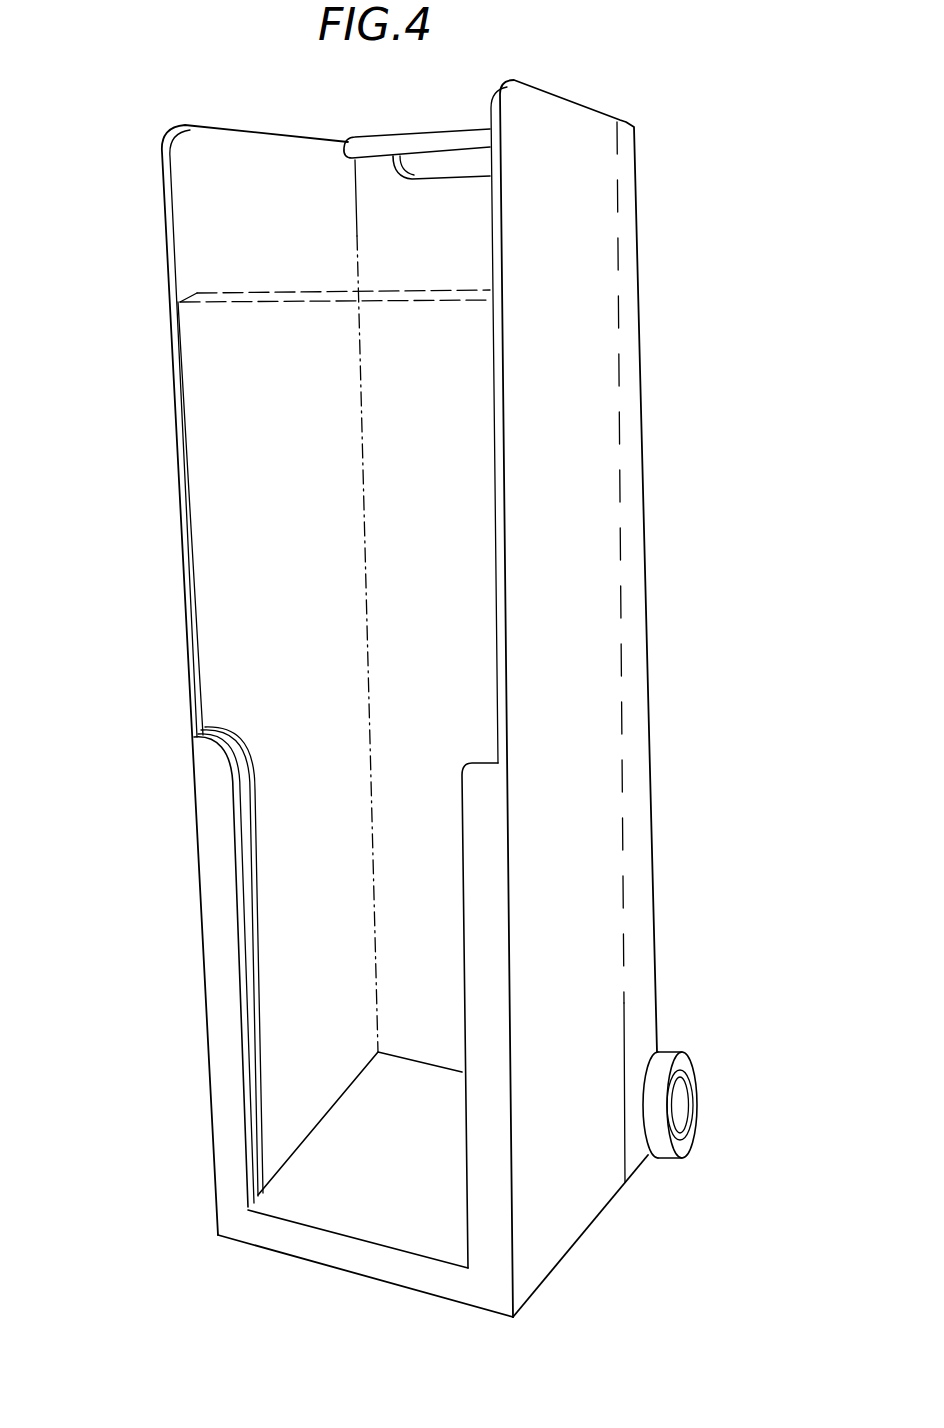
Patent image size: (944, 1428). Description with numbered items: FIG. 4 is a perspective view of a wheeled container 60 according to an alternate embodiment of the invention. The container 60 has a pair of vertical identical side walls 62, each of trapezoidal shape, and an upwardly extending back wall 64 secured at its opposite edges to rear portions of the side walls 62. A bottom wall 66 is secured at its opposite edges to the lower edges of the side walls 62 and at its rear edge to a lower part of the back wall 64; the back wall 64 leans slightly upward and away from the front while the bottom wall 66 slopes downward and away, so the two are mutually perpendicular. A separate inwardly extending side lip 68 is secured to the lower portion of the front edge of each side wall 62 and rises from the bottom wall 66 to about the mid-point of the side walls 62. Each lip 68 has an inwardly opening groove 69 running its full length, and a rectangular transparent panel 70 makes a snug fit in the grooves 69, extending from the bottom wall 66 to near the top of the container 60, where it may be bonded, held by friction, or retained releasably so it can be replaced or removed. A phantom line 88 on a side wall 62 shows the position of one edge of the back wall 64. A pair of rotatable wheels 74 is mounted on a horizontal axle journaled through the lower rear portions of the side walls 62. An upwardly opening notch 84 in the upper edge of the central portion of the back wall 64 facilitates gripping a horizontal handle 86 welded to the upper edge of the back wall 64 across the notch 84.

The container 60 is at (652, 292).
The side walls 62 is at (166, 278).
The back wall 64 is at (380, 173).
The bottom wall 66 is at (314, 1212).
The side lip 68 is at (212, 822).
The groove 69 is at (212, 730).
The transparent panel 70 is at (423, 290).
The wheels 74 is at (667, 1055).
The notch 84 is at (453, 172).
The handle 86 is at (421, 133).
The phantom line 88 is at (618, 512).